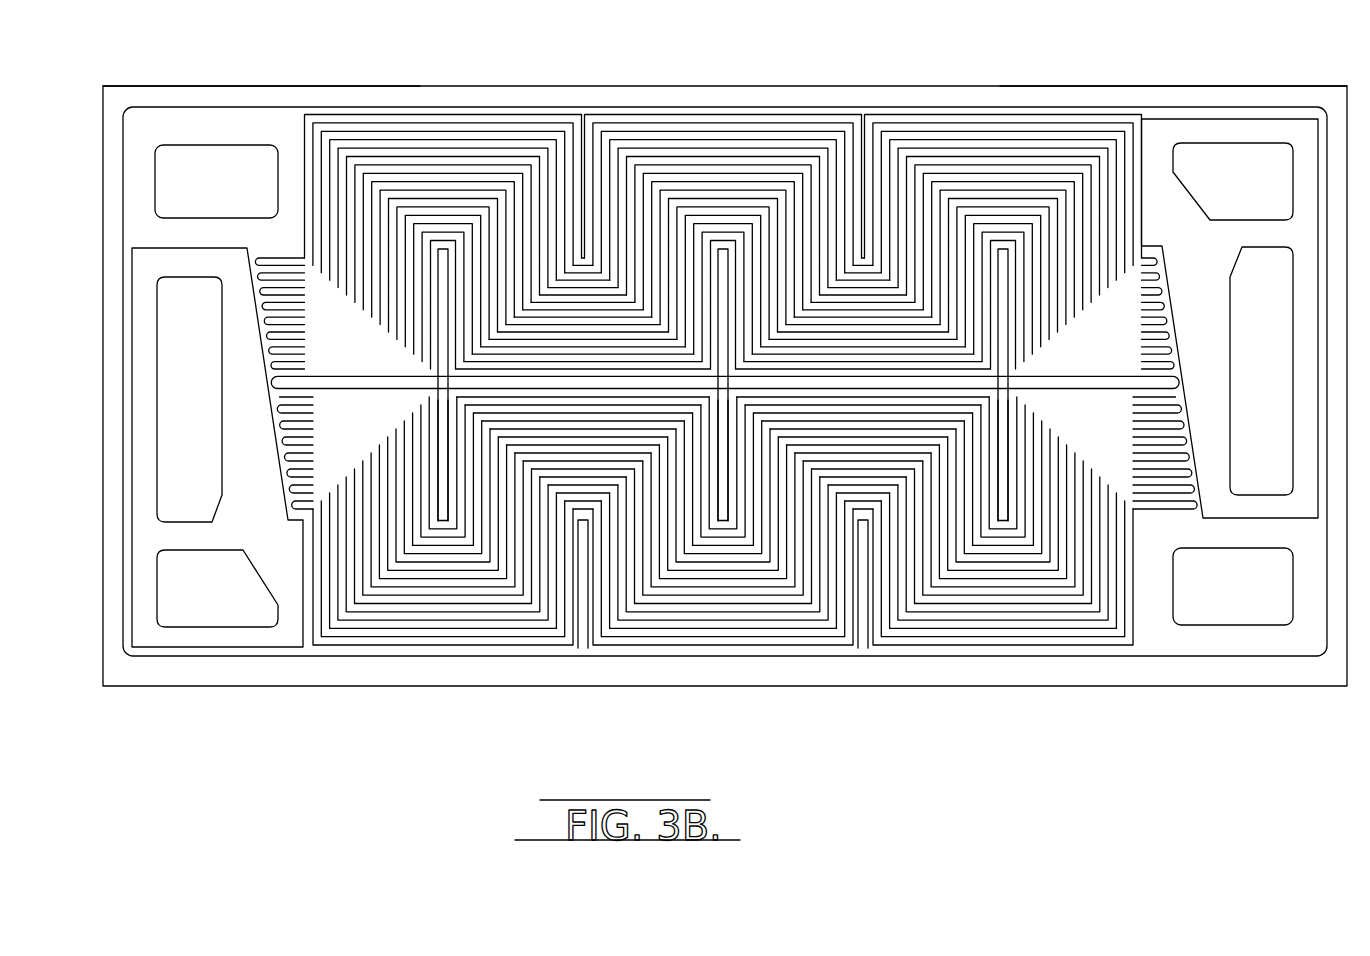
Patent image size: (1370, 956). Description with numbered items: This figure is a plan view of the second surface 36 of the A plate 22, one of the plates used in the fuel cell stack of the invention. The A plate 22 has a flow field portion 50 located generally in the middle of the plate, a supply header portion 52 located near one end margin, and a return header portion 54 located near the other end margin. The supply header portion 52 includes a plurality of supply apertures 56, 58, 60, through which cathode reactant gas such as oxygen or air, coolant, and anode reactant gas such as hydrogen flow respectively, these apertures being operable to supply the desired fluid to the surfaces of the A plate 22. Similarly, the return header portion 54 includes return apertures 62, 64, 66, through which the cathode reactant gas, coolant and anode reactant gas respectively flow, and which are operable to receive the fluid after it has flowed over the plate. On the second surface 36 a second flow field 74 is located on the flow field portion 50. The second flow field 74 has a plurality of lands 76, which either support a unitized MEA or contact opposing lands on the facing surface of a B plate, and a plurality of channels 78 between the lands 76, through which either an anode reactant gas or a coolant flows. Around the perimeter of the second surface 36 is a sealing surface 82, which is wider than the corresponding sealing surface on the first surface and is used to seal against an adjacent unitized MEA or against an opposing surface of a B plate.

The A plate 22 is at (1192, 766).
The second surface 36 is at (1060, 766).
The flow field portion 50 is at (985, 600).
The supply header portion 52 is at (1238, 86).
The return header portion 54 is at (203, 86).
The supply aperture 56 is at (1252, 303).
The supply aperture 58 is at (1232, 200).
The supply aperture 60 is at (1222, 605).
The return aperture 62 is at (190, 447).
The return aperture 64 is at (200, 617).
The return aperture 66 is at (262, 153).
The second flow field 74 is at (723, 558).
The lands 76 is at (503, 629).
The channels 78 is at (437, 636).
The sealing surface 82 is at (1335, 440).